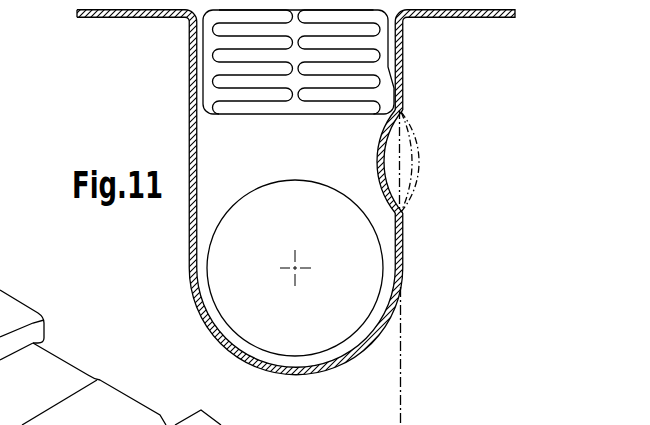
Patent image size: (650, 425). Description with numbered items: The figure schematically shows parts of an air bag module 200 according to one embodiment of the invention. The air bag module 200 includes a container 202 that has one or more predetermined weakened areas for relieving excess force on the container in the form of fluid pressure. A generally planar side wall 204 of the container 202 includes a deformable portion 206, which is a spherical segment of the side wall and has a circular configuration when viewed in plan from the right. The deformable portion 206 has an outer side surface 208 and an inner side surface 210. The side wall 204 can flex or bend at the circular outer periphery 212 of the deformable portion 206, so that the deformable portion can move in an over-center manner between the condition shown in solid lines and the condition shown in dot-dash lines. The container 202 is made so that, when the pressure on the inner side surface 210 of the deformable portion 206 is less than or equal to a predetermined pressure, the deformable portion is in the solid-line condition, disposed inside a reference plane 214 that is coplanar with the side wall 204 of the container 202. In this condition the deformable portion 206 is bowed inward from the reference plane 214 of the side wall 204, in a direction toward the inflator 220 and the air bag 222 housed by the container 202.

The air bag module 200 is at (120, 100).
The container 202 is at (172, 146).
The side wall 204 is at (403, 258).
The deformable portion 206 is at (406, 159).
The outer side surface 208 is at (403, 138).
The inner side surface 210 is at (380, 156).
The circular outer periphery 212 is at (403, 215).
The reference plane 214 is at (403, 383).
The inflator 220 is at (192, 258).
The air bag 222 is at (201, 66).